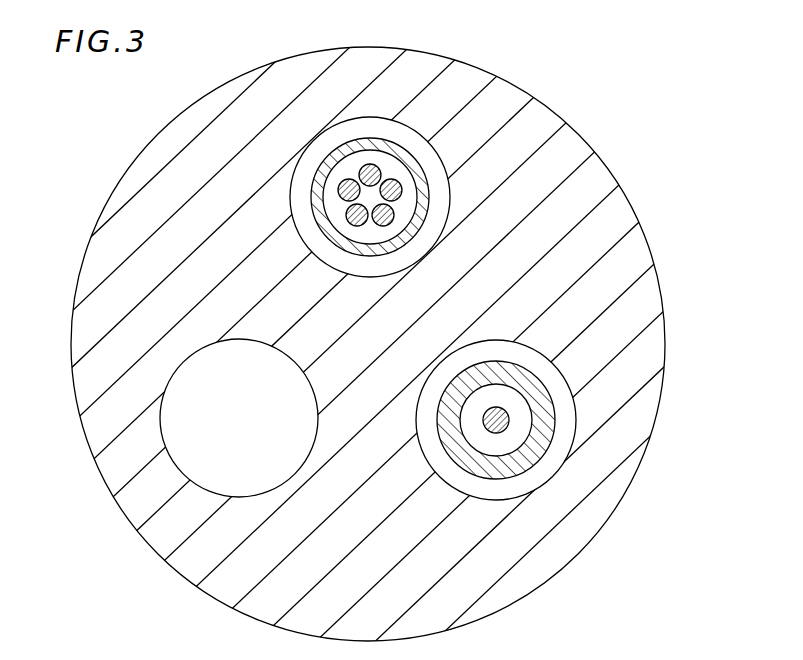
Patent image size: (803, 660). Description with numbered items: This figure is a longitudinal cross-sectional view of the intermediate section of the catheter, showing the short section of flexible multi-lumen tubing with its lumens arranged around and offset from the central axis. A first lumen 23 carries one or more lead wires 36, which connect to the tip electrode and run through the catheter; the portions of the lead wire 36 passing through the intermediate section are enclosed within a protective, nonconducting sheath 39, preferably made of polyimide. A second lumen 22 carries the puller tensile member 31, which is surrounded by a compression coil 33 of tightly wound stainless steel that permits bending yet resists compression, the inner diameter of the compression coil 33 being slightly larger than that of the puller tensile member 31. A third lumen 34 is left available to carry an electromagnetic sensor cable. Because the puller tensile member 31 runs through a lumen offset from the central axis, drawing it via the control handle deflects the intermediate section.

The second lumen 22 is at (570, 384).
The first lumen 23 is at (479, 158).
The puller tensile member 31 is at (547, 432).
The compression coil 33 is at (509, 420).
The third lumen 34 is at (207, 490).
The lead wire 36 is at (374, 165).
The protective, nonconducting sheath 39 is at (452, 190).